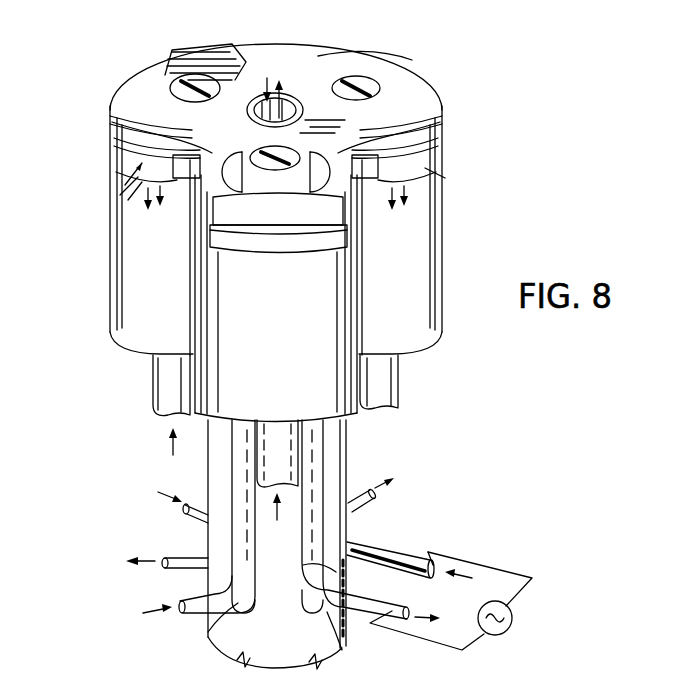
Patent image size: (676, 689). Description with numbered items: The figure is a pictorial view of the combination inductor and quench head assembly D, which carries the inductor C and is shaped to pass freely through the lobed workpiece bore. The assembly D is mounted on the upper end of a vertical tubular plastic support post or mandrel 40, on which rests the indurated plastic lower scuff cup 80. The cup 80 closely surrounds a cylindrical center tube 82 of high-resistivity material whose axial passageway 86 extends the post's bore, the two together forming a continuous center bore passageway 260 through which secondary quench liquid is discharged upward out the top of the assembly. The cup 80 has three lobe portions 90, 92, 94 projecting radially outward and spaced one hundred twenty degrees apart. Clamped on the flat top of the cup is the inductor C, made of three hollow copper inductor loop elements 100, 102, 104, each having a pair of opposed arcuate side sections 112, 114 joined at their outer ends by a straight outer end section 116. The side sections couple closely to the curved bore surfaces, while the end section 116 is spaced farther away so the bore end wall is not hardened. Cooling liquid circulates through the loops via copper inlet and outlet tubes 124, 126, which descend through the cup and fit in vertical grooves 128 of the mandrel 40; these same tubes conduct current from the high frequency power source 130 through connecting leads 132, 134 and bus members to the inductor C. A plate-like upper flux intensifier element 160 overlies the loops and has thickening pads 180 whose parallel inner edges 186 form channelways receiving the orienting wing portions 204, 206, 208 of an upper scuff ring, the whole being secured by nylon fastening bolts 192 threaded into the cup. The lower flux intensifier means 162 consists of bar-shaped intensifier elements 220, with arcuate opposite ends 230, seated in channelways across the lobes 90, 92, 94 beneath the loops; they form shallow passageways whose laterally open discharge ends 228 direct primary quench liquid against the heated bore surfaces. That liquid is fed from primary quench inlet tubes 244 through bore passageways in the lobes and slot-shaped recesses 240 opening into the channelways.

The tubular support post or mandrel 40 is at (215, 468).
The lower scuff cup 80 is at (440, 305).
The center tube 82 is at (302, 98).
The axial passageway 86 is at (250, 117).
The lobe portion 90 is at (135, 284).
The lobe portion 92 is at (428, 265).
The lobe portion 94 is at (225, 326).
The inductor loop element 100 is at (125, 170).
The inductor loop element 102 is at (432, 176).
The inductor loop element 104 is at (272, 234).
The arcuate side section 112 is at (124, 132).
The arcuate side section 114 is at (190, 232).
The straight outer end section 116 is at (296, 240).
The coolant inlet tube 124 is at (235, 538).
The coolant outlet tube 126 is at (190, 570).
The vertical grooves 128 is at (208, 627).
The high frequency power source 130 is at (513, 620).
The connecting lead 132 is at (510, 560).
The connecting lead 134 is at (420, 645).
The flux intensifier element 160 is at (133, 104).
The lower flux intensifier means 162 is at (128, 190).
The thickening pads 180 is at (137, 95).
The inner edges 186 is at (375, 50).
The fastening bolts 192 is at (357, 76).
The orienting wing portion 204 is at (153, 66).
The orienting wing portion 206 is at (410, 75).
The orienting wing portion 208 is at (278, 198).
The bar-shaped intensifier element 220 is at (138, 152).
The discharge ends 228 is at (277, 209).
The opposite ends 230 is at (492, 11).
The slot-shaped recess 240 is at (609, 15).
The primary quench inlet tube 244 is at (170, 398).
The center bore passageway 260 is at (266, 96).
The inductor C is at (442, 119).
The inductor and quench head assembly D is at (442, 237).